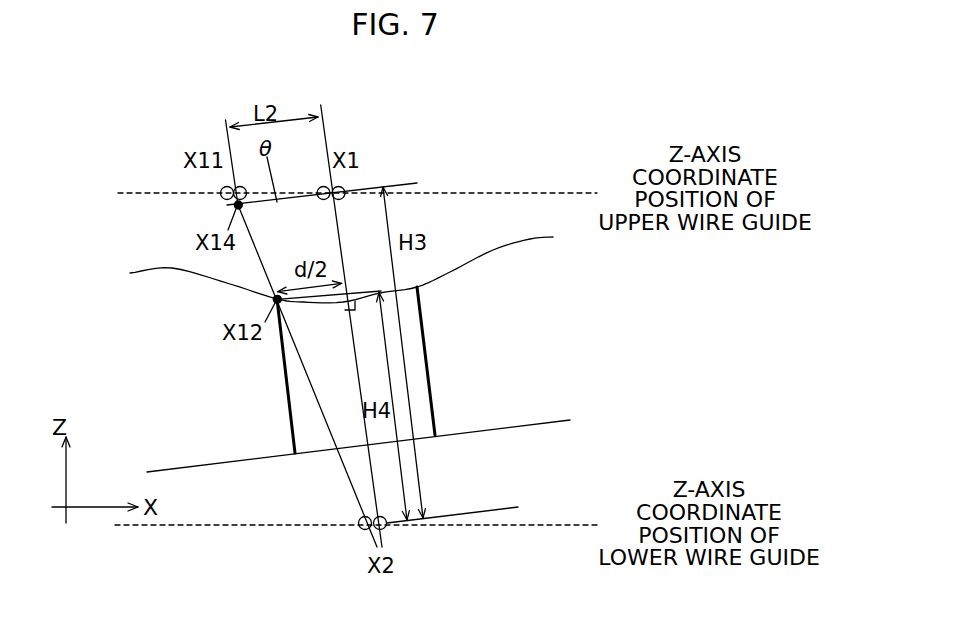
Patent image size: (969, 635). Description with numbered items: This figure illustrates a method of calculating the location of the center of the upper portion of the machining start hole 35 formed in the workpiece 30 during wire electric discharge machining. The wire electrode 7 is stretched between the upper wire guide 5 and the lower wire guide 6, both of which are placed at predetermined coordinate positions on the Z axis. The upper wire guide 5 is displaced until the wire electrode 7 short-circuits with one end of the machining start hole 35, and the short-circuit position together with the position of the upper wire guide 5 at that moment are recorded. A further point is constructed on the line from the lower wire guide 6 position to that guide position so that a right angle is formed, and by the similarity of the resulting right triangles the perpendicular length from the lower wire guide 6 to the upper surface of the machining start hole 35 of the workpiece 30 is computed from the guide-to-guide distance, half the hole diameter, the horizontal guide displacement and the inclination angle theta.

The upper wire guide 5 is at (218, 193).
The lower wire guide 6 is at (363, 529).
The wire electrode 7 is at (365, 468).
The workpiece 30 is at (522, 415).
The machining start hole 35 is at (298, 424).